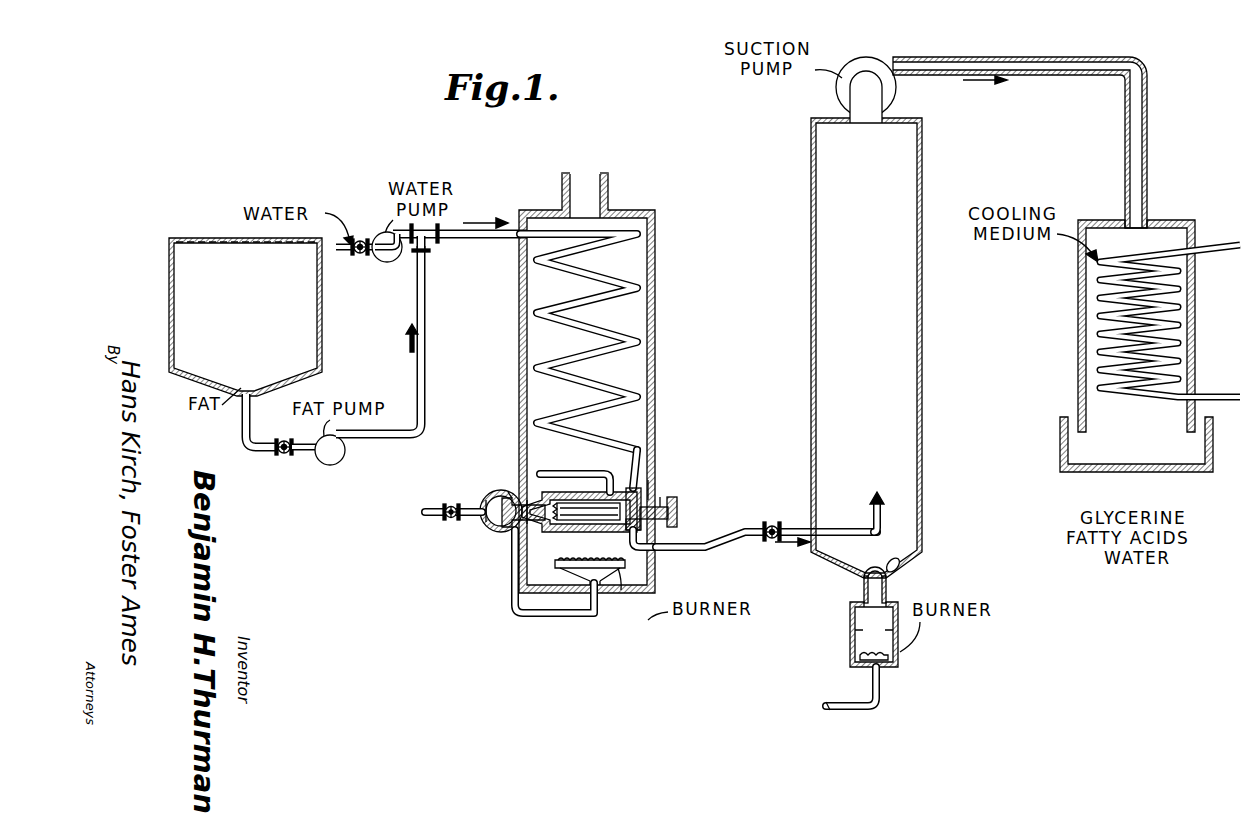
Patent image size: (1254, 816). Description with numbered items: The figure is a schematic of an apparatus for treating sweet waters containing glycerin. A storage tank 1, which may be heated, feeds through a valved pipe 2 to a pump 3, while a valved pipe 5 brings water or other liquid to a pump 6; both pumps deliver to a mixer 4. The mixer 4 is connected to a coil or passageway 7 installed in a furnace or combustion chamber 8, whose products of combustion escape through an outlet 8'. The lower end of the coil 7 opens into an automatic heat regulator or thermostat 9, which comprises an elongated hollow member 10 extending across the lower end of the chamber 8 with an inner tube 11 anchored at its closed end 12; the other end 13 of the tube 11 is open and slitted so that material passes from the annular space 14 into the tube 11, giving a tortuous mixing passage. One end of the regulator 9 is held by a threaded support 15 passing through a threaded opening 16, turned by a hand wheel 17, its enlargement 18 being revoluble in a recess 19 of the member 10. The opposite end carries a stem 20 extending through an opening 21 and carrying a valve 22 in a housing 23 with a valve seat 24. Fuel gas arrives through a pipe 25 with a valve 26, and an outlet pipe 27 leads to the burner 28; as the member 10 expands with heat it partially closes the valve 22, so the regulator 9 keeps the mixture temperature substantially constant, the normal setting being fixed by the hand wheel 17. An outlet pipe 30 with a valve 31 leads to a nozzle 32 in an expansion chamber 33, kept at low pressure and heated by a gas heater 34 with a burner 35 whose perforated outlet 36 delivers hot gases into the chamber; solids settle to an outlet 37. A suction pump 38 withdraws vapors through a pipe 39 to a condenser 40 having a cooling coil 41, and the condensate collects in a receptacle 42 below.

The storage tank 1 is at (300, 338).
The valved pipe 2 is at (254, 430).
The pump 3 is at (327, 464).
The mixer 4 is at (428, 248).
The valved pipe 5 is at (358, 254).
The pump 6 is at (390, 262).
The coil or passageway 7 is at (540, 266).
The furnace or combustion chamber 8 is at (572, 383).
The outlet 8' is at (567, 184).
The heat regulator or thermostat 9 is at (609, 581).
The elongated hollow member 10 is at (590, 532).
The inner tube 11 is at (587, 503).
The closed end 12 is at (634, 494).
The open end 13 is at (562, 500).
The annular space 14 is at (640, 452).
The threaded support 15 is at (664, 497).
The threaded opening 16 is at (670, 524).
The enlarged head or hand wheel 17 is at (678, 510).
The enlargement 18 is at (651, 478).
The recess 19 is at (652, 552).
The stem or extension 20 is at (531, 470).
The opening 21 is at (488, 520).
The valve 22 is at (490, 500).
The housing 23 is at (510, 490).
The valve seat 24 is at (506, 530).
The pipe 25 is at (434, 518).
The valve 26 is at (449, 505).
The outlet pipe 27 is at (511, 600).
The burner 28 is at (621, 590).
The outlet pipe 30 is at (737, 543).
The valve 31 is at (776, 522).
The nozzle 32 is at (870, 512).
The expansion chamber 33 is at (924, 450).
The gas heater 34 is at (862, 618).
The burner 35 is at (872, 682).
The perforated outlet 36 is at (898, 572).
The outlet 37 is at (860, 578).
The suction fan or pump 38 is at (882, 62).
The pipe 39 is at (1048, 77).
The condenser 40 is at (1080, 298).
The cooling coil 41 is at (1182, 318).
The receptacle 42 is at (1105, 460).